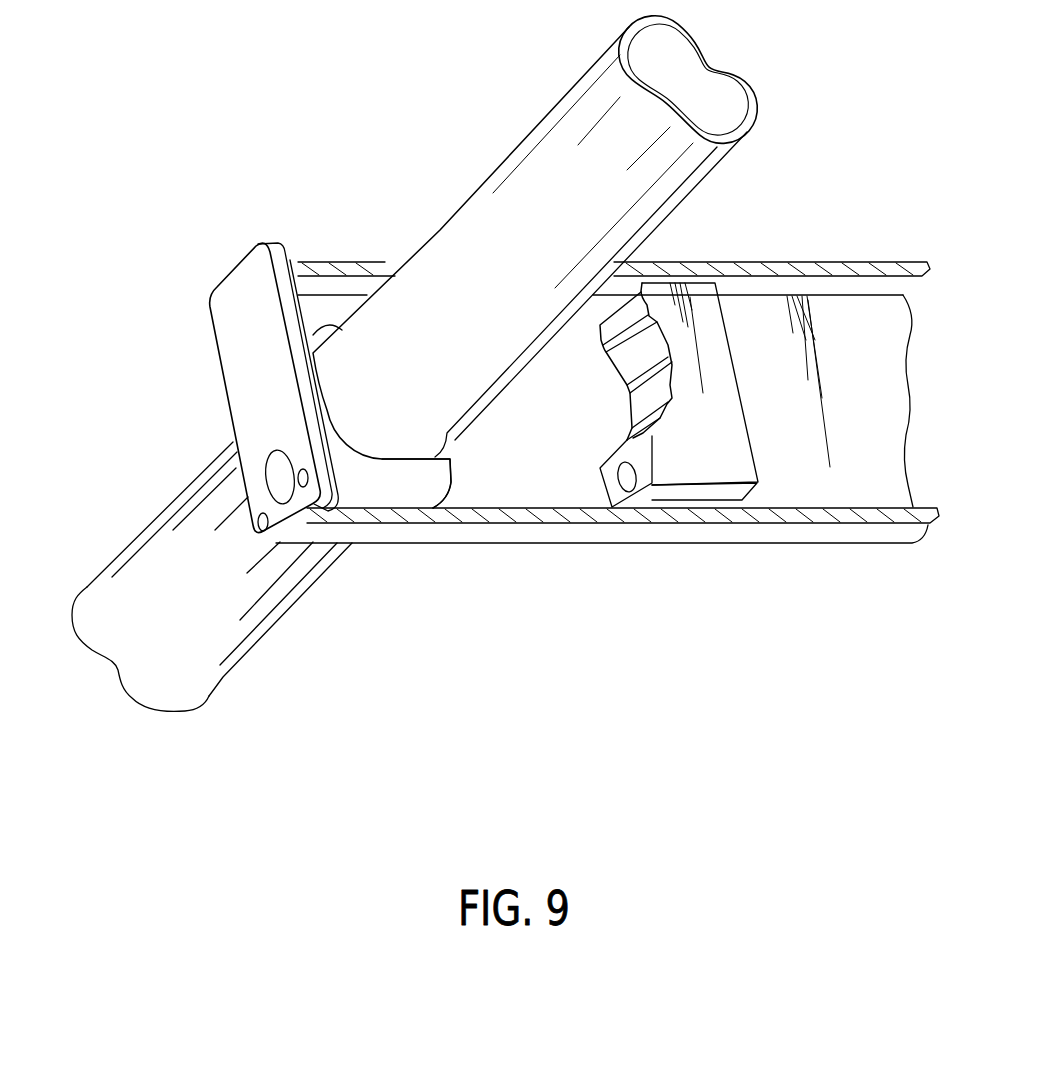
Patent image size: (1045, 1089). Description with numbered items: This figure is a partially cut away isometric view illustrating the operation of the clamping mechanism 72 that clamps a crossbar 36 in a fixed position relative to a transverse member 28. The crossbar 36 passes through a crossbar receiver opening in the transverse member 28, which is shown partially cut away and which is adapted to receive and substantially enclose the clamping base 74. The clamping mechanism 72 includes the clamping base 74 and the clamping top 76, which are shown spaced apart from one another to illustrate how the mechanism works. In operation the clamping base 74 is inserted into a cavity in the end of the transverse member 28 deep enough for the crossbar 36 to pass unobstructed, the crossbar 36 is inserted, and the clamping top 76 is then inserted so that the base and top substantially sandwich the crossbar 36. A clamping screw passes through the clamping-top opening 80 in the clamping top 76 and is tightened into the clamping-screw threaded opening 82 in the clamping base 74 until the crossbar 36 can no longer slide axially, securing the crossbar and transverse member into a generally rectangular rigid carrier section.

The first transverse member 28 is at (778, 262).
The crossbar 36 is at (542, 130).
The clamping mechanism 72 is at (187, 373).
The clamping base 74 is at (723, 462).
The clamping top 76 is at (230, 312).
The clamping-top opening 80 is at (268, 482).
The clamping-screw threaded opening 82 is at (623, 483).